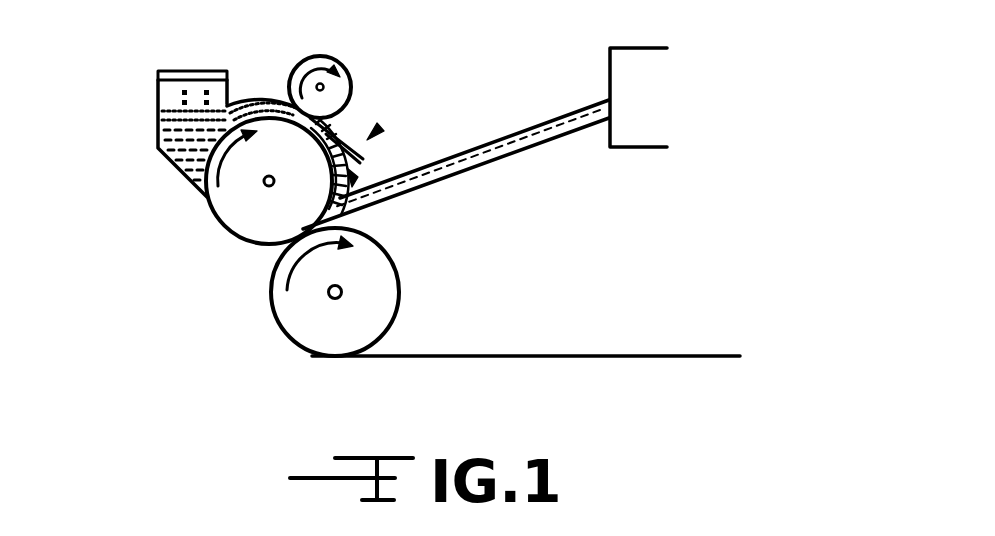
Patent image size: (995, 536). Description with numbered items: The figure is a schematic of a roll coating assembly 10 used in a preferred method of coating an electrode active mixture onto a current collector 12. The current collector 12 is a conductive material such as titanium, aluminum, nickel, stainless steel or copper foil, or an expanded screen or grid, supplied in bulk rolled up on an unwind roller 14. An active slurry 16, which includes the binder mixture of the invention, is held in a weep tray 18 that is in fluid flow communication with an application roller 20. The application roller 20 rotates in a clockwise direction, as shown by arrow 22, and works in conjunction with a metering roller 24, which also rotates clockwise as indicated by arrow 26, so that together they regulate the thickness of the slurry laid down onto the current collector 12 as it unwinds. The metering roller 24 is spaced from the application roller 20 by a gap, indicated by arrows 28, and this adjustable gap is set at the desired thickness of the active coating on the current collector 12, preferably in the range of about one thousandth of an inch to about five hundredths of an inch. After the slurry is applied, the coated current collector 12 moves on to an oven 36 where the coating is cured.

The roll coating assembly 10 is at (488, 88).
The current collector 12 is at (504, 355).
The unwind roller 14 is at (372, 280).
The active slurry 16 is at (195, 97).
The weep tray 18 is at (158, 103).
The application roller 20 is at (242, 214).
The arrow 22 is at (222, 158).
The metering roller 24 is at (352, 75).
The arrow 26 is at (292, 67).
The arrows 28 is at (362, 162).
The oven 36 is at (632, 140).